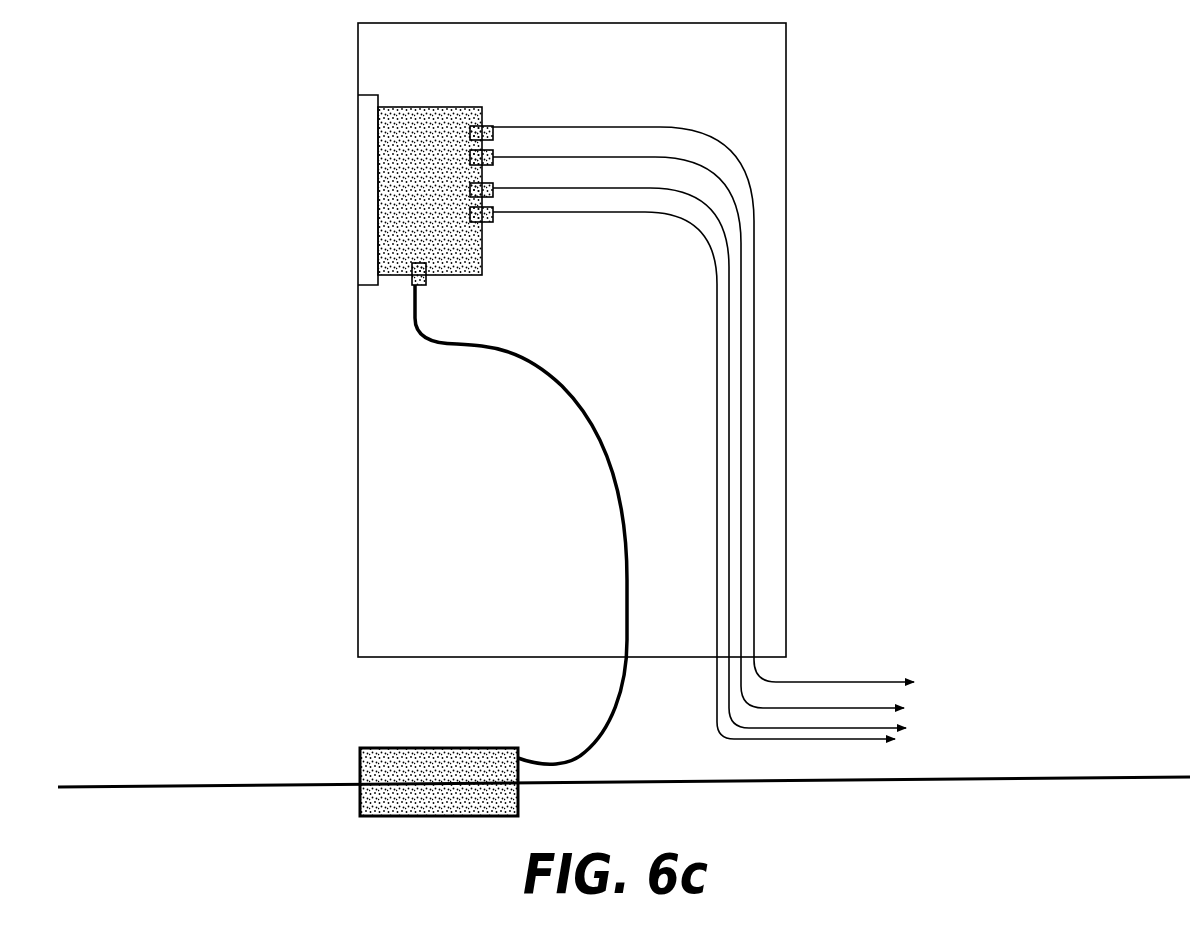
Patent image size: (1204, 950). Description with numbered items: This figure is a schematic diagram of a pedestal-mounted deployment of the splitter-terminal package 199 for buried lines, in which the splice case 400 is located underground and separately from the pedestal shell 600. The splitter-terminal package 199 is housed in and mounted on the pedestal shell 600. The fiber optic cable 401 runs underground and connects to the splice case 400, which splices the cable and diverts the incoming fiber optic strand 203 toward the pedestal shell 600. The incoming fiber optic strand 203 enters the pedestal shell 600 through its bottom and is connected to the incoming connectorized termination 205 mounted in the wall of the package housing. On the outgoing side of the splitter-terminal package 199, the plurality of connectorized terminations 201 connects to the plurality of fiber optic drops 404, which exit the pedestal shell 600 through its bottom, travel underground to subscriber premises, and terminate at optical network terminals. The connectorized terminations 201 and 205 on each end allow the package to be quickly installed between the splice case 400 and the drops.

The splitter-terminal package 199 is at (418, 107).
The connectorized terminations 201 is at (487, 126).
The incoming fiber optic strand 203 is at (605, 723).
The incoming connectorized termination 205 is at (412, 288).
The splice case 400 is at (380, 748).
The fiber optic cable 401 is at (220, 787).
The fiber optic drops 404 is at (928, 673).
The pedestal shell 600 is at (786, 178).